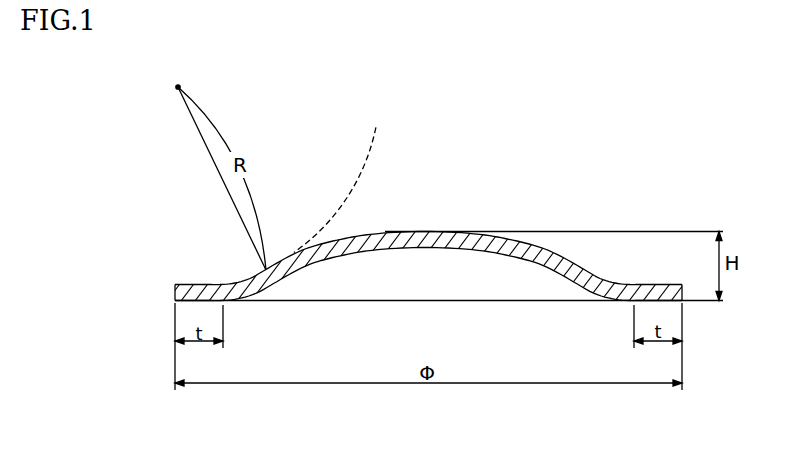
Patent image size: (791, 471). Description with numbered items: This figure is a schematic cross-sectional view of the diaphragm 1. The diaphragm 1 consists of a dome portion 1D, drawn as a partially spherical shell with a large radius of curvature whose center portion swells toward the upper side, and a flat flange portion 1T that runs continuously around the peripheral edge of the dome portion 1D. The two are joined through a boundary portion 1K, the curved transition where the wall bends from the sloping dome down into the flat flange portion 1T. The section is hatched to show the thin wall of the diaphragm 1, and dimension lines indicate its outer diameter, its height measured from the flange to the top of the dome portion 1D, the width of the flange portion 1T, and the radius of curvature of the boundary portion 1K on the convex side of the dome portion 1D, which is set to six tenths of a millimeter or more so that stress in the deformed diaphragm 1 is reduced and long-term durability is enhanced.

The diaphragm 1 is at (448, 208).
The dome portion 1D is at (447, 231).
The boundary portion 1K is at (249, 280).
The flange portion 1T is at (652, 285).